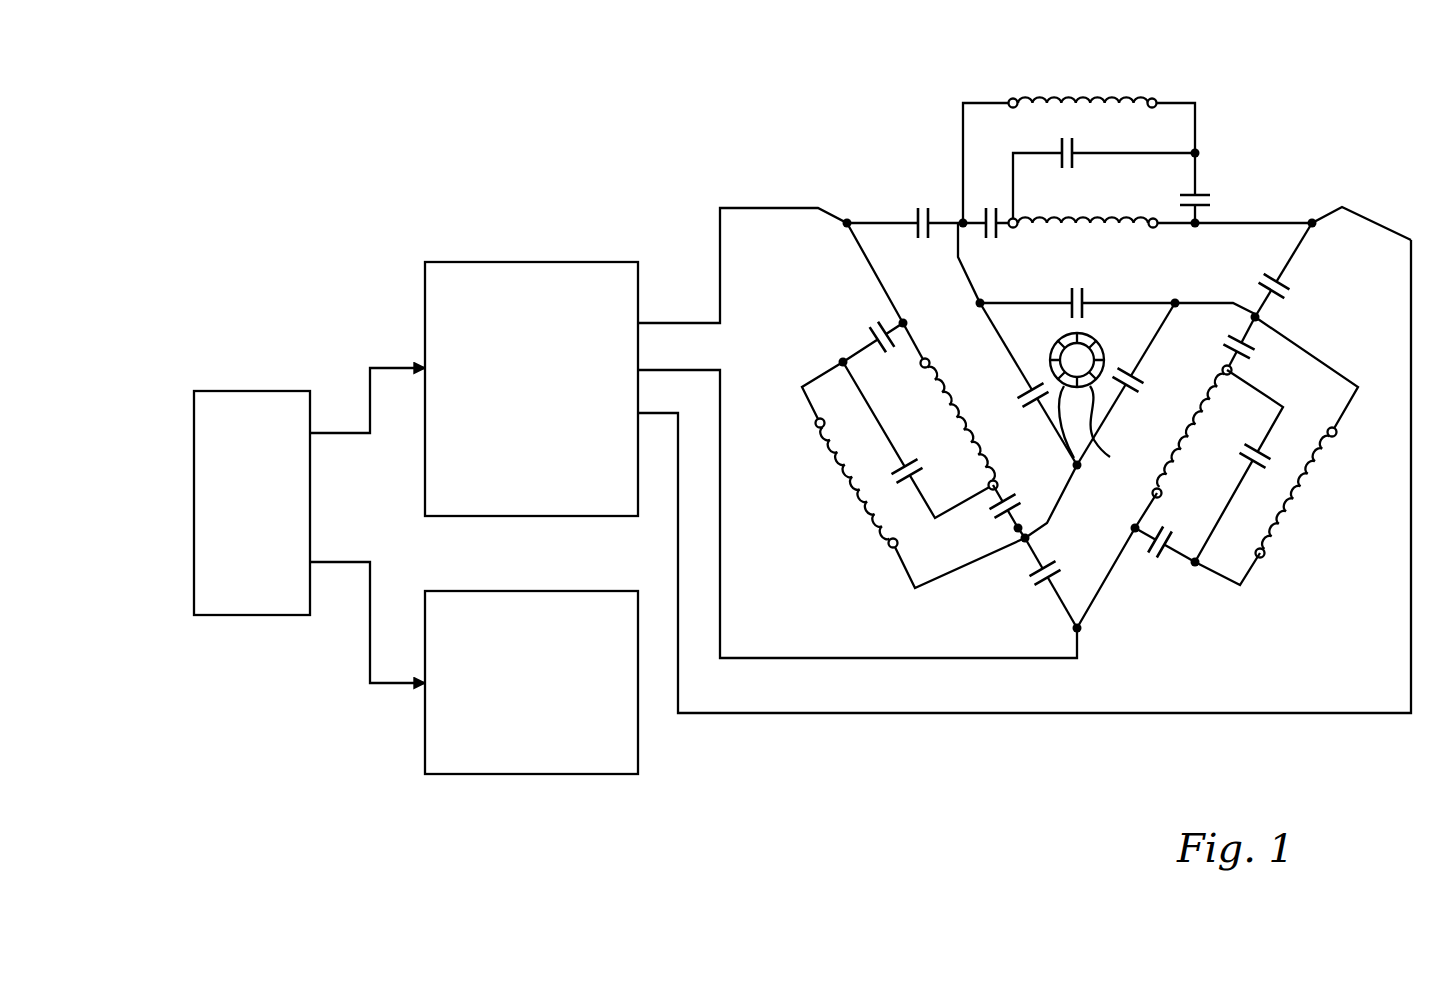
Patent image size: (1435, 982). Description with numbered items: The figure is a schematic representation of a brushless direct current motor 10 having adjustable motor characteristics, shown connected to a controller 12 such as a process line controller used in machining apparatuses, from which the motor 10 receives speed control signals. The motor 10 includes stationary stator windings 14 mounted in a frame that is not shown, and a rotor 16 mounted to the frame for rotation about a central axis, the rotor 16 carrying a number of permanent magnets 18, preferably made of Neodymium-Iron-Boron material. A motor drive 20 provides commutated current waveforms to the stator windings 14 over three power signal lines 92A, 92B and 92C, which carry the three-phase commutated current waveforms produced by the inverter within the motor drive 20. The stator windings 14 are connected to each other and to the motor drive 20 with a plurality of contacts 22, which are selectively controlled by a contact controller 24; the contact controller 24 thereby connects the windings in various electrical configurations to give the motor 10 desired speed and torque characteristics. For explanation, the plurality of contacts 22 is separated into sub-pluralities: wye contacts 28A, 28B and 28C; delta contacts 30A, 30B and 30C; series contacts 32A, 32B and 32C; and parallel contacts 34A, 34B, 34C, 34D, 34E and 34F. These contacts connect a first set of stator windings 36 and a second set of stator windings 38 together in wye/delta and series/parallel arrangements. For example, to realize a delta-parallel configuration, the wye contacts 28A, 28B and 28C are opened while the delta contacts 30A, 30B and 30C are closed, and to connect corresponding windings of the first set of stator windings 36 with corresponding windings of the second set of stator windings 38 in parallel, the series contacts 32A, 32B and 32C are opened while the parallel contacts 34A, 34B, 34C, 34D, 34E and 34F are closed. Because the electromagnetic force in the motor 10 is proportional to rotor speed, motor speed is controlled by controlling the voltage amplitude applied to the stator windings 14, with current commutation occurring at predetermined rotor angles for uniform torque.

The brushless direct current motor 10 is at (440, 205).
The controller 12 is at (228, 391).
The stator windings 14 is at (930, 125).
The rotor 16 is at (1108, 328).
The permanent magnets 18 is at (1092, 448).
The motor drive 20 is at (557, 262).
The contacts 22 is at (1222, 122).
The contact controller 24 is at (527, 774).
The wye contact 28A is at (1065, 298).
The wye contact 28B is at (1130, 388).
The wye contact 28C is at (1040, 410).
The delta contact 30A is at (912, 217).
The delta contact 30B is at (1287, 285).
The delta contact 30C is at (1038, 582).
The series contact 32A is at (1076, 153).
The series contact 32B is at (1245, 450).
The series contact 32C is at (908, 468).
The parallel contact 34A is at (1000, 222).
The parallel contact 34B is at (1200, 197).
The parallel contact 34C is at (1265, 350).
The parallel contact 34D is at (1163, 550).
The parallel contact 34E is at (1000, 520).
The parallel contact 34F is at (870, 335).
The first set of stator windings 36 is at (1293, 207).
The second set of stator windings 38 is at (1178, 88).
The power signal line 92A is at (670, 322).
The power signal line 92B is at (667, 370).
The power signal line 92C is at (655, 413).